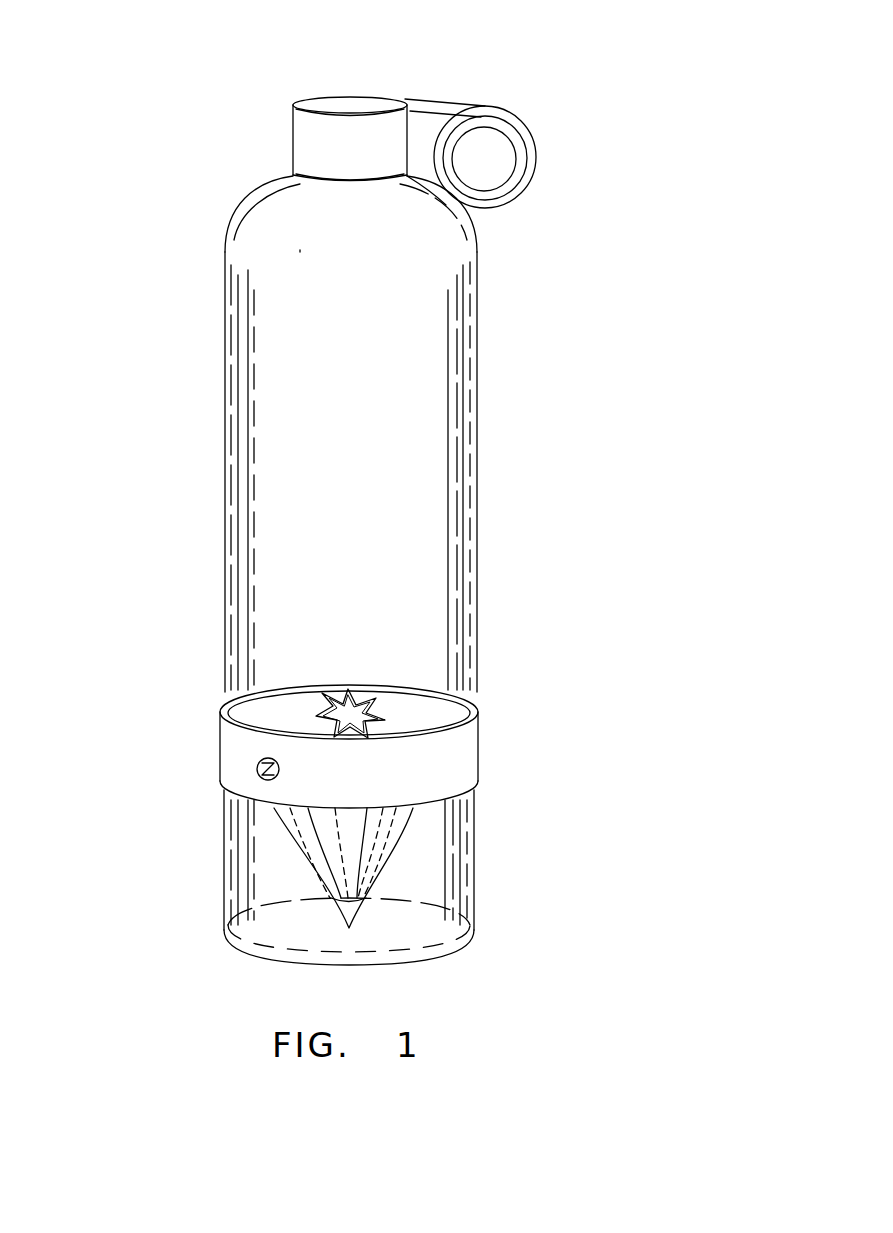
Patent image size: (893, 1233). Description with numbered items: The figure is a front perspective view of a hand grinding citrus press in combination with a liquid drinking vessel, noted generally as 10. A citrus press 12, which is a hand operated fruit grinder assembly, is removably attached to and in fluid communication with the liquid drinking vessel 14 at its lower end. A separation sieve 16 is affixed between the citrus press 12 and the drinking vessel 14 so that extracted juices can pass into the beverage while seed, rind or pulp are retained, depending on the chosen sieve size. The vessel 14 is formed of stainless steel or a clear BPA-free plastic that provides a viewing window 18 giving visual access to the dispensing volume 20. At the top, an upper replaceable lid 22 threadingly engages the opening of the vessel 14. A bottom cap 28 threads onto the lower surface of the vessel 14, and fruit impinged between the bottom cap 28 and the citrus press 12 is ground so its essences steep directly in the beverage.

The hand grinding citrus press in combination with a liquid drinking vessel 10 is at (592, 286).
The citrus press 12 is at (397, 855).
The liquid drinking vessel 14 is at (478, 521).
The separation sieve 16 is at (298, 842).
The viewing window 18 is at (327, 451).
The dispensing volume 20 is at (338, 319).
The upper replaceable lid 22 is at (295, 102).
The bottom cap 28 is at (470, 937).